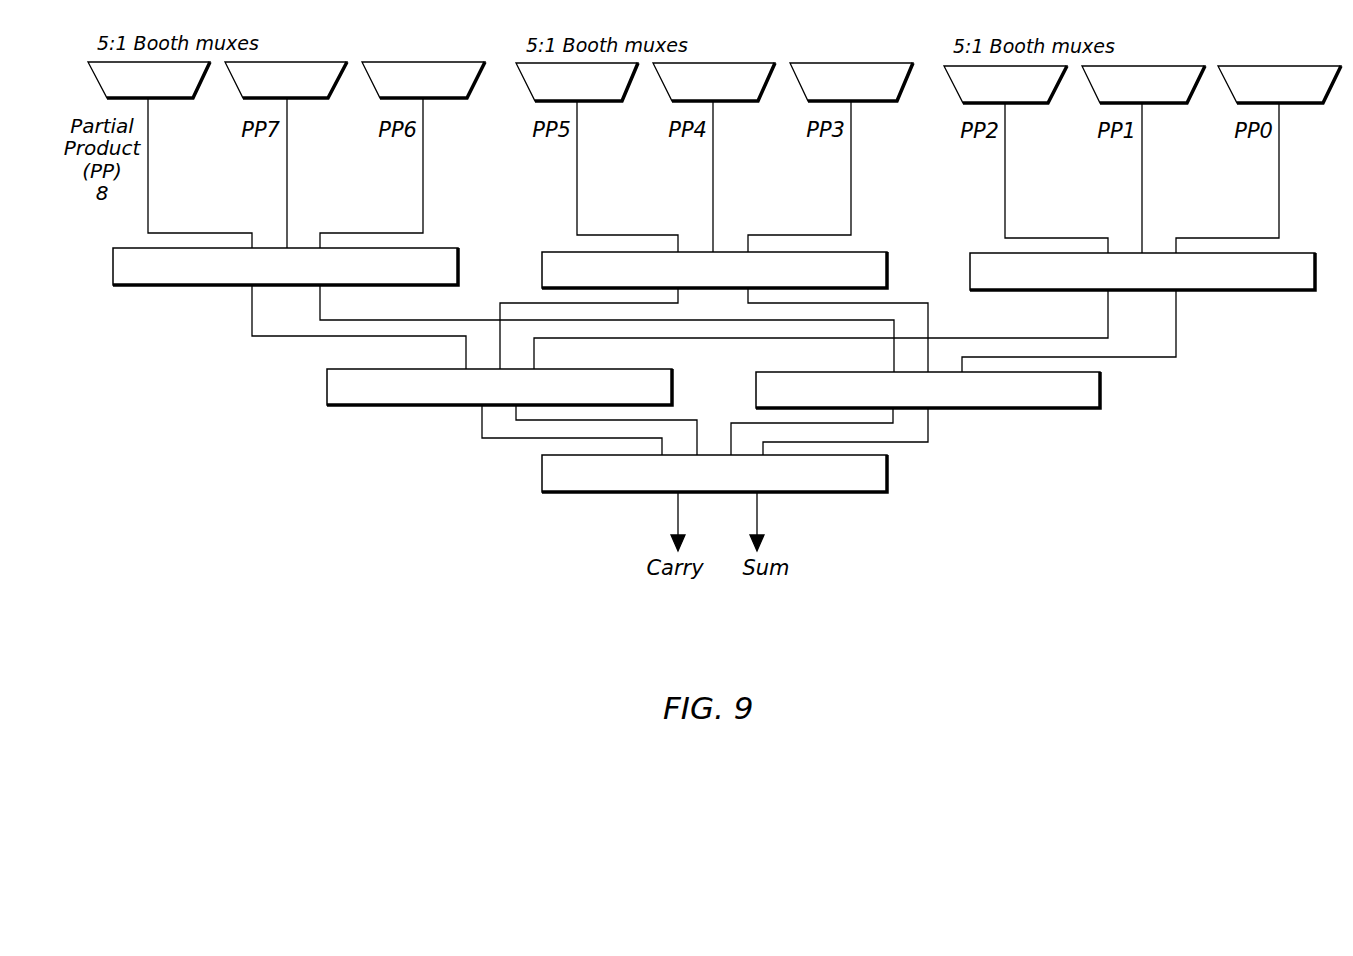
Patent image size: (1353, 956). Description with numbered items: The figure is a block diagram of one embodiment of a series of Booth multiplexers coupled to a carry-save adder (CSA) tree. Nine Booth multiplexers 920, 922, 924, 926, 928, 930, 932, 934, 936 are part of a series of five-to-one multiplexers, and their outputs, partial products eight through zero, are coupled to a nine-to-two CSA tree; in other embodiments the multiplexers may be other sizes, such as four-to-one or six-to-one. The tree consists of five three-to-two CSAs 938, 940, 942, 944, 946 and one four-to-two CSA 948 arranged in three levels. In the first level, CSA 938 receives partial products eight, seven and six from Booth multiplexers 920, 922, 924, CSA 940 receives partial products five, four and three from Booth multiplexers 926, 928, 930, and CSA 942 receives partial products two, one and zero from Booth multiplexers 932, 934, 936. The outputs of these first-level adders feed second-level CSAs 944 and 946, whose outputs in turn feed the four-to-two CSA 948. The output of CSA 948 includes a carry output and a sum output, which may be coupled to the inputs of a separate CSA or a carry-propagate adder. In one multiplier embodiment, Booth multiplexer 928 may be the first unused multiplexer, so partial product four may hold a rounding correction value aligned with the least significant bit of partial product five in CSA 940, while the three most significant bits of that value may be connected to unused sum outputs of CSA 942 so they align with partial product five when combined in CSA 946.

The Booth multiplexer 920 is at (130, 90).
The Booth multiplexer 922 is at (267, 90).
The Booth multiplexer 924 is at (404, 90).
The Booth multiplexer 926 is at (558, 91).
The Booth multiplexer 928 is at (695, 91).
The Booth multiplexer 930 is at (832, 91).
The Booth multiplexer 932 is at (986, 94).
The Booth multiplexer 934 is at (1124, 94).
The Booth multiplexer 936 is at (1261, 94).
The 3:2 CSA 938 is at (173, 286).
The 3:2 CSA 940 is at (542, 263).
The 3:2 CSA 942 is at (970, 266).
The 3:2 CSA 944 is at (327, 383).
The 3:2 CSA 946 is at (1102, 393).
The 4:2 CSA 948 is at (889, 474).